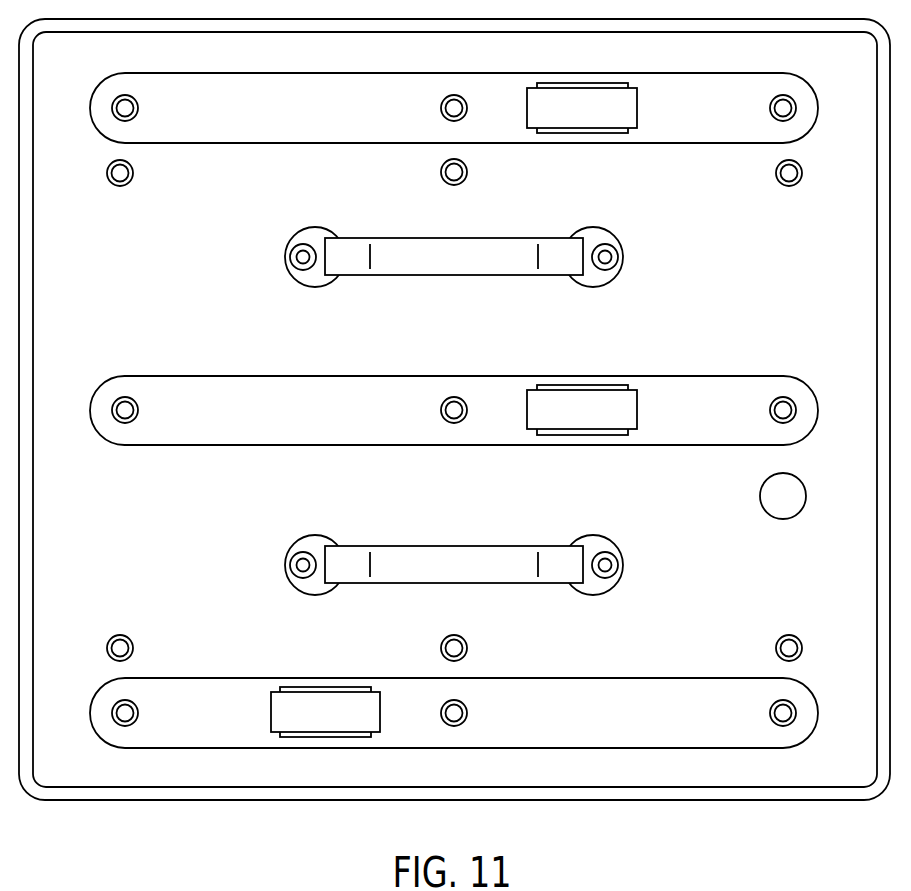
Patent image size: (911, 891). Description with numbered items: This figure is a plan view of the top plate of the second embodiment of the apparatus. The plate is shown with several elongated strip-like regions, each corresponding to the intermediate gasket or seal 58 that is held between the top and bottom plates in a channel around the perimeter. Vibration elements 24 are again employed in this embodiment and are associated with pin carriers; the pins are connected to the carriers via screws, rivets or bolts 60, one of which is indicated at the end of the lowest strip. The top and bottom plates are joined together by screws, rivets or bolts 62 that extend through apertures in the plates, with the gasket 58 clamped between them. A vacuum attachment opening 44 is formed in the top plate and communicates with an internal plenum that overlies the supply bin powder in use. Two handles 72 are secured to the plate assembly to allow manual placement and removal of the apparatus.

The vibration element 24 is at (583, 135).
The vacuum attachment opening 44 is at (760, 496).
The gasket 58 is at (245, 143).
The screws, rivets or bolts 60 is at (781, 700).
The screws, rivets or bolts 62 is at (789, 635).
The handle 72 is at (624, 256).